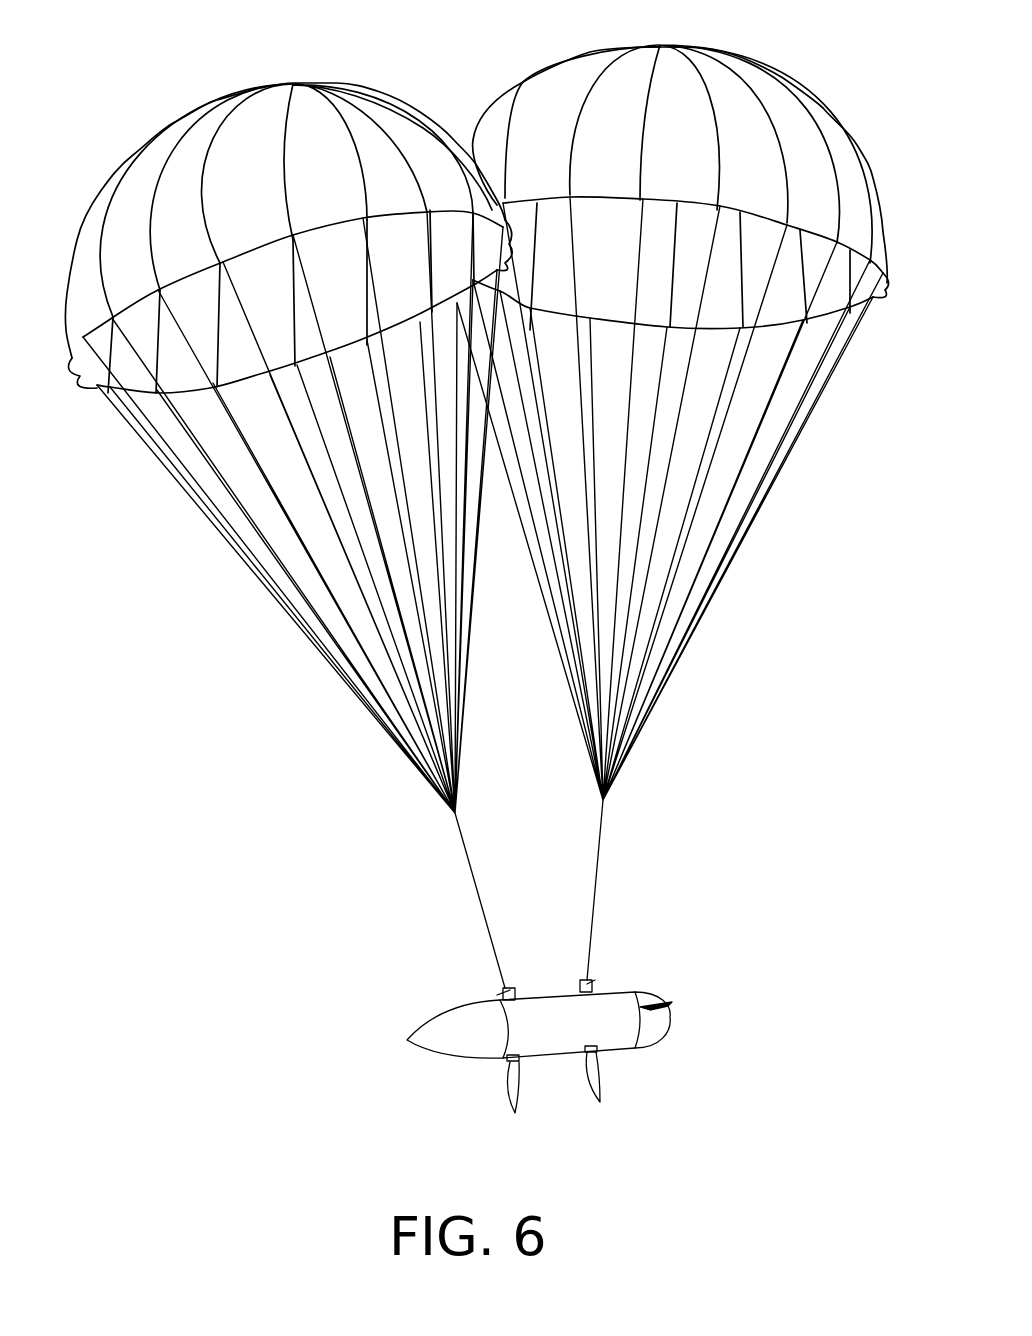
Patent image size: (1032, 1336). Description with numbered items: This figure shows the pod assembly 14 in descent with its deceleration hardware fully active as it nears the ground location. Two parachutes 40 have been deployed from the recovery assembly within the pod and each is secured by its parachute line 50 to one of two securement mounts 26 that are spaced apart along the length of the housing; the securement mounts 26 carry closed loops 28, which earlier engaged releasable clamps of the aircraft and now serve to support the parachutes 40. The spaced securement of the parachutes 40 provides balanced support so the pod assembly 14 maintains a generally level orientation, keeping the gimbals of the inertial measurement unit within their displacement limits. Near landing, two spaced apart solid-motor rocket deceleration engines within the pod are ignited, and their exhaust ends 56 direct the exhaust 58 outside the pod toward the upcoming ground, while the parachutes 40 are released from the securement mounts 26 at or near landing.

The pod assembly 14 is at (633, 1035).
The securement mount 26 is at (497, 995).
The closed loop 28 is at (510, 987).
The parachute 40 is at (262, 112).
The parachute line 50 is at (468, 868).
The exhaust end 56 is at (498, 1067).
The exhaust 58 is at (512, 1107).